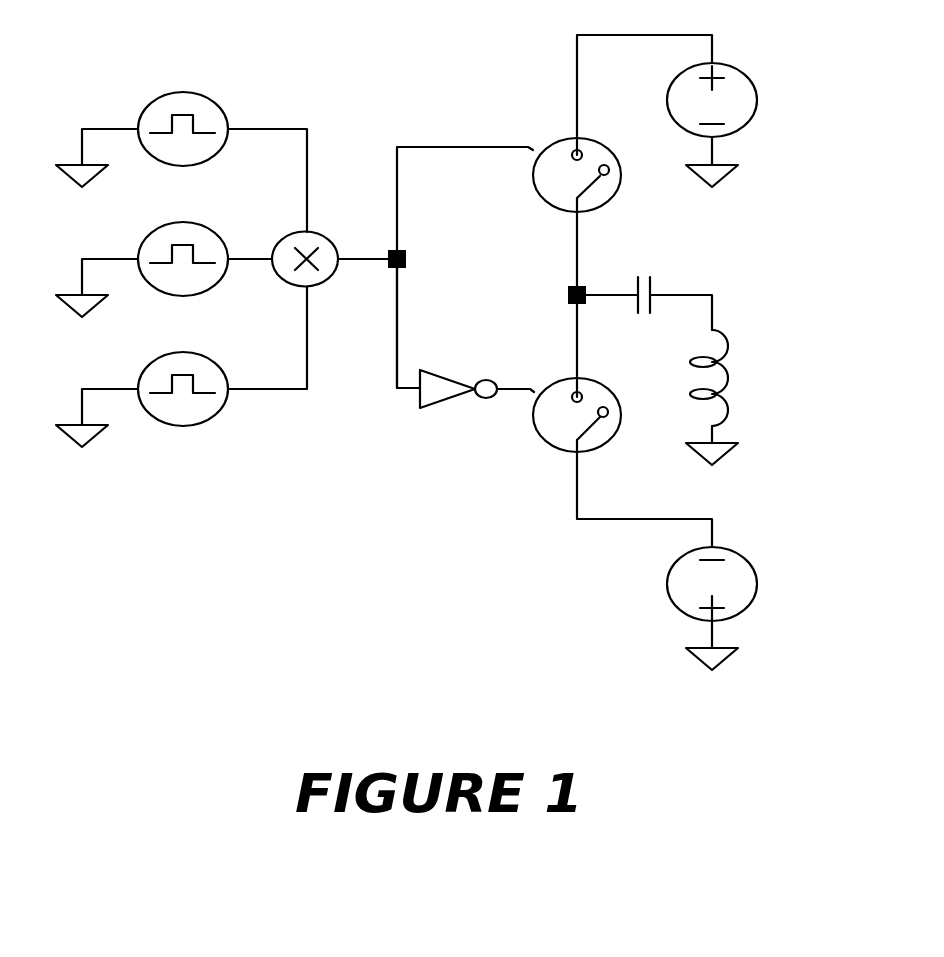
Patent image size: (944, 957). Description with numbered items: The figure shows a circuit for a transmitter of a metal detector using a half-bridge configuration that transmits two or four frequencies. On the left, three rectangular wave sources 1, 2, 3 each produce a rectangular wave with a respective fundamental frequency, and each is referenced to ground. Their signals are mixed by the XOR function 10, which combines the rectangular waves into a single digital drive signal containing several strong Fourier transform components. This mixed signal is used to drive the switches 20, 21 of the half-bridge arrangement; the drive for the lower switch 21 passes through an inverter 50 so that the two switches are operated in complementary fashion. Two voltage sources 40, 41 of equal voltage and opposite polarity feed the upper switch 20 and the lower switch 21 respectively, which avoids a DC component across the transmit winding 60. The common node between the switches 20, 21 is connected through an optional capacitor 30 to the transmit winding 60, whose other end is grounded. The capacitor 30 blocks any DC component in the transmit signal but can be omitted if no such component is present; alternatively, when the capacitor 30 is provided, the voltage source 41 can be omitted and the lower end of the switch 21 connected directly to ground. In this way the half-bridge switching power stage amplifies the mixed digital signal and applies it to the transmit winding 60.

The rectangular wave source 1 is at (142, 121).
The rectangular wave source 2 is at (142, 252).
The rectangular wave source 3 is at (142, 382).
The XOR function 10 is at (317, 248).
The switch 20 is at (588, 188).
The switch 21 is at (588, 428).
The capacitor 30 is at (649, 314).
The voltage source 40 is at (730, 125).
The voltage source 41 is at (730, 608).
The inverter 50 is at (458, 374).
The transmit winding 60 is at (729, 397).